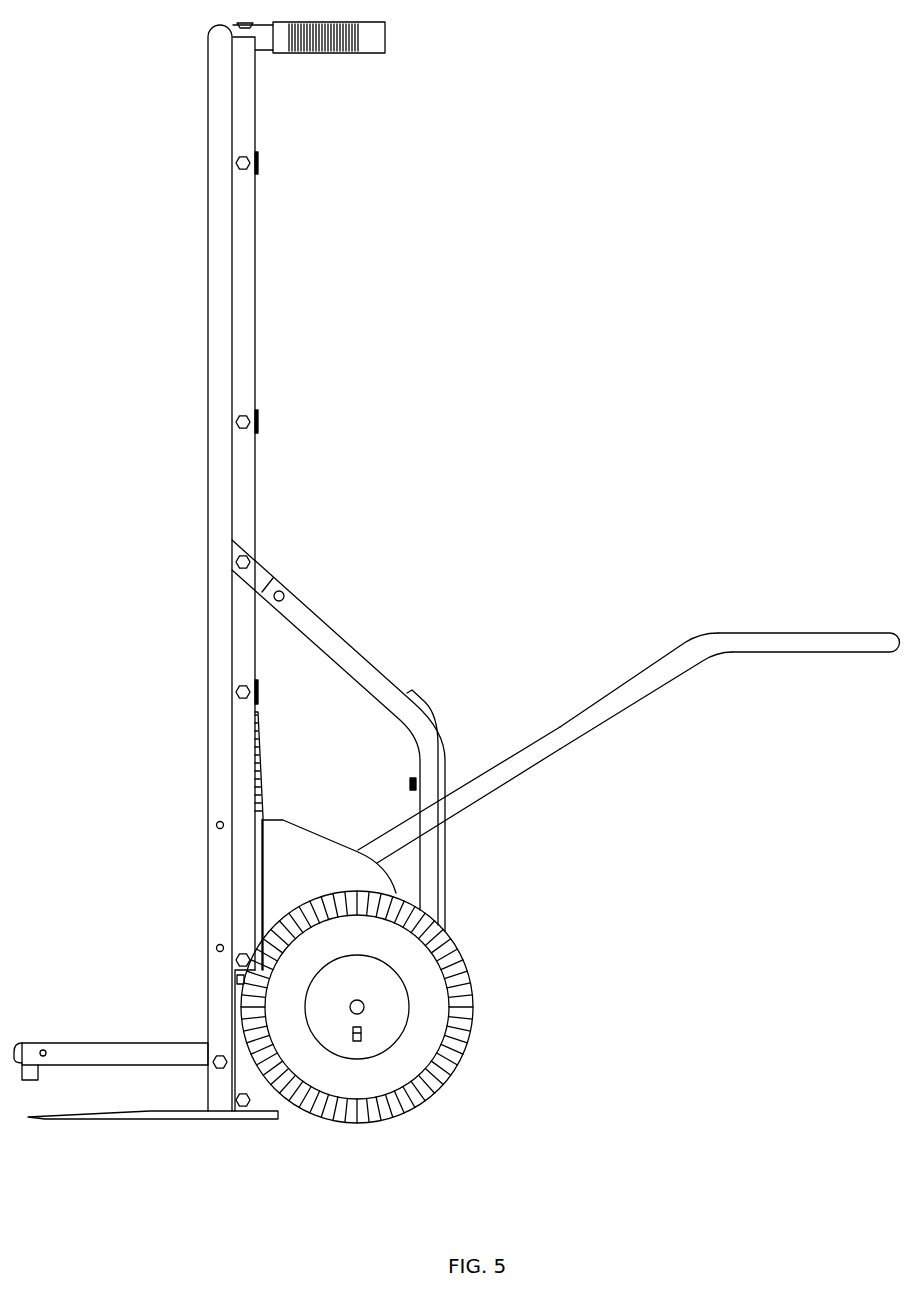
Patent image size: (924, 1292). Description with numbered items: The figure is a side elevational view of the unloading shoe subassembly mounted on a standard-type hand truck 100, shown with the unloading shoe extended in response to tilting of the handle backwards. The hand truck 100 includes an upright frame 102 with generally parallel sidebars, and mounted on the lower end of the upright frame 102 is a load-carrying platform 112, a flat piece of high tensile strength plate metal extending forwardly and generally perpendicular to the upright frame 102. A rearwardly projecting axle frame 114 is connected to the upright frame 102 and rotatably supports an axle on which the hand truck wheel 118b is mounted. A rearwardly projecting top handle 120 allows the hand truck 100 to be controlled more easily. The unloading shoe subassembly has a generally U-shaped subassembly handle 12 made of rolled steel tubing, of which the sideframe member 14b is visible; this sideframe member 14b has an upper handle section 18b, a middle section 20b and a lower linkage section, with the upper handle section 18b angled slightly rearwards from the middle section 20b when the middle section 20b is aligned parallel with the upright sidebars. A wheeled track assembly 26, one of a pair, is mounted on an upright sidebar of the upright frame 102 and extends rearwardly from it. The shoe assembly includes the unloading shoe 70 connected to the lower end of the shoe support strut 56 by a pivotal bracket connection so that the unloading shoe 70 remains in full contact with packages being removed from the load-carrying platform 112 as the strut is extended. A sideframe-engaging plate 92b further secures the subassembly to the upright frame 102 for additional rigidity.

The hand truck 100 is at (201, 255).
The upright frame 102 is at (235, 377).
The top handle 120 is at (343, 43).
The axle frame 114 is at (383, 697).
The subassembly handle 12 is at (629, 714).
The sideframe member 14b is at (603, 715).
The upper handle section 18b is at (788, 650).
The middle section 20b is at (538, 760).
The wheeled track assembly 26 is at (358, 875).
The hand truck wheel 118b is at (417, 1043).
The sideframe-engaging plate 92b is at (263, 1087).
The shoe support strut 56 is at (113, 1052).
The unloading shoe 70 is at (14, 1055).
The load-carrying platform 112 is at (145, 1113).